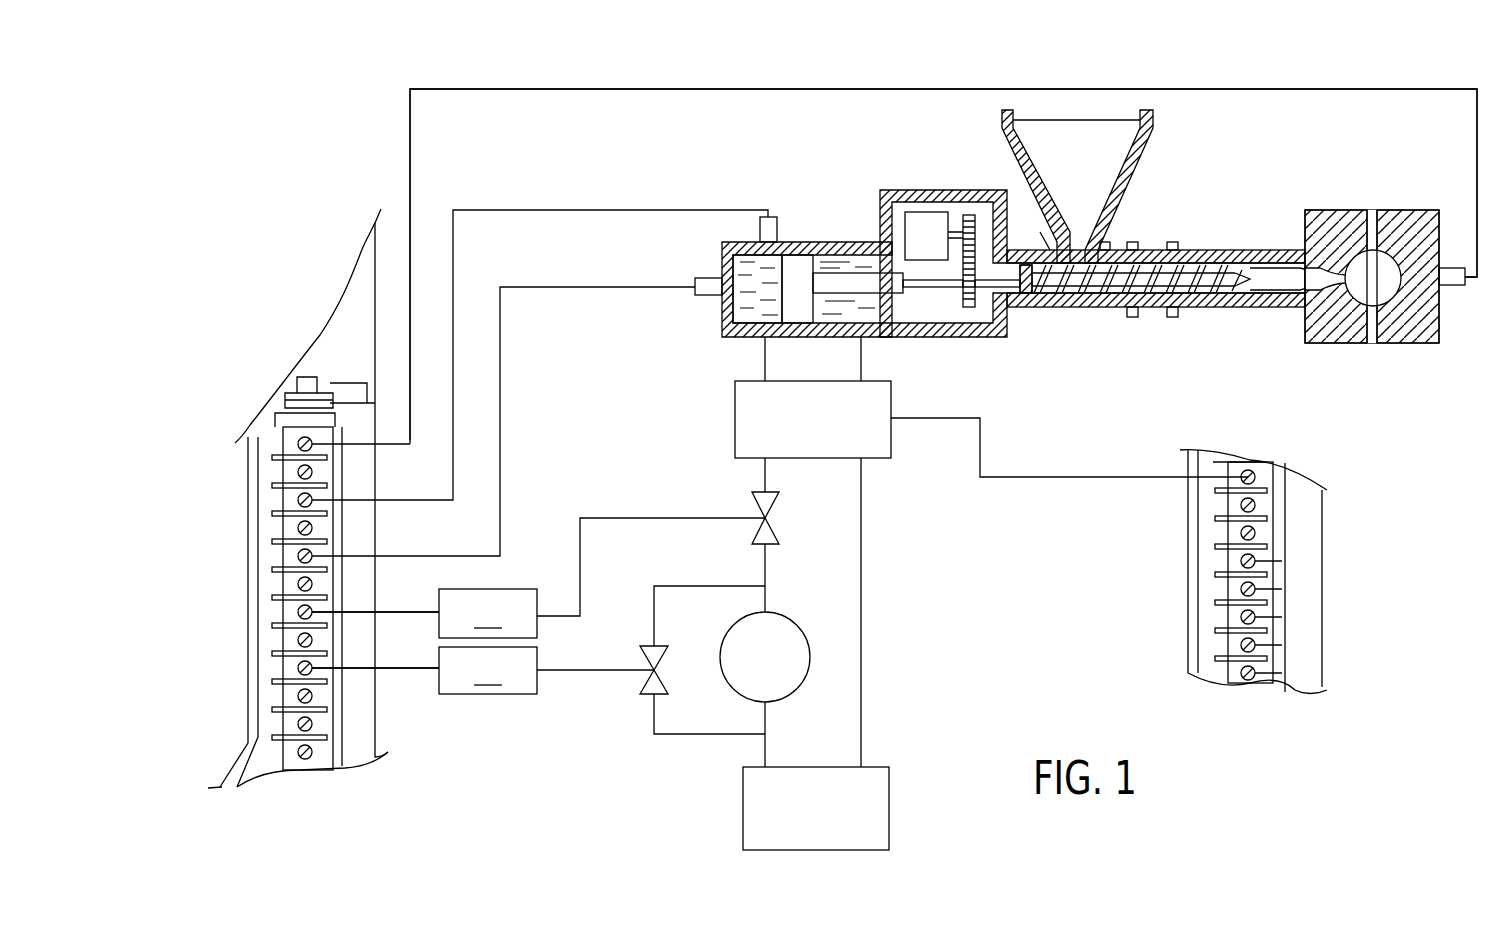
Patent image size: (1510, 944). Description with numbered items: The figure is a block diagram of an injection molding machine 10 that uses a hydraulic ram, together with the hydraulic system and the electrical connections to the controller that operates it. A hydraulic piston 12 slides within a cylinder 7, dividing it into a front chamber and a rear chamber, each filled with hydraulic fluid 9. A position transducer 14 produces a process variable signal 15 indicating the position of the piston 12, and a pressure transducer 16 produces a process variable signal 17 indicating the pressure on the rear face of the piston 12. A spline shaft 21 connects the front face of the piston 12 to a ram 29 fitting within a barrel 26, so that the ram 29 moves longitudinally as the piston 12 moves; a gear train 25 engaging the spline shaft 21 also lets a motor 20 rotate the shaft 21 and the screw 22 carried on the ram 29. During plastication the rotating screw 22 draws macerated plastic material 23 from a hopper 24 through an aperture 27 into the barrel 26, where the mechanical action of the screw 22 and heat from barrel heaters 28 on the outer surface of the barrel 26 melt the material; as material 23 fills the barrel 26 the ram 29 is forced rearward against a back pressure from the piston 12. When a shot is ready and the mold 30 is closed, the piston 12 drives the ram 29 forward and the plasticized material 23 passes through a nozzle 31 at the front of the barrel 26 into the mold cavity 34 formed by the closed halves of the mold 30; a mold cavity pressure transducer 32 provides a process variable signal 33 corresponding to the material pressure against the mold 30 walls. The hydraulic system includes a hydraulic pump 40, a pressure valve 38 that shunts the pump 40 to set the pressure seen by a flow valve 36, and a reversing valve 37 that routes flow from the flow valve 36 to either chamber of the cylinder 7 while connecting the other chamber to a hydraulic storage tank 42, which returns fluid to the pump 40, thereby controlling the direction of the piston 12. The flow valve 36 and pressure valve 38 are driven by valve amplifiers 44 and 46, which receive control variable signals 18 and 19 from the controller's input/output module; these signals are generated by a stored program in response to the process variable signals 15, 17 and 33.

The injection molding machine 10 is at (1058, 66).
The process variable signal 33 is at (678, 91).
The process variable signal 17 is at (690, 208).
The process variable signal 15 is at (545, 290).
The control variable signal 18 is at (402, 605).
The control variable signal 19 is at (403, 670).
The cylinder 7 is at (738, 330).
The hydraulic fluid 9 is at (738, 315).
The position transducer 14 is at (718, 277).
The pressure transducer 16 is at (778, 227).
The hydraulic piston 12 is at (798, 255).
The spline shaft 21 is at (917, 283).
The motor 20 is at (926, 232).
The gear train 25 is at (980, 297).
The aperture 27 is at (1047, 240).
The barrel 26 is at (1085, 307).
The ram 29 is at (1023, 298).
The barrel heaters 28 is at (1172, 242).
The screw 22 is at (1212, 290).
The hopper 24 is at (1142, 170).
The plastic material 23 is at (1061, 170).
The mold 30 is at (1333, 210).
The nozzle 31 is at (1318, 290).
The mold cavity 34 is at (1382, 290).
The mold cavity pressure transducer 32 is at (1455, 290).
The reversing valve 37 is at (893, 440).
The flow valve 36 is at (777, 503).
The hydraulic pump 40 is at (799, 617).
The pressure valve 38 is at (660, 662).
The hydraulic storage tank 42 is at (812, 767).
The valve amplifier 44 is at (488, 613).
The valve amplifier 46 is at (488, 670).